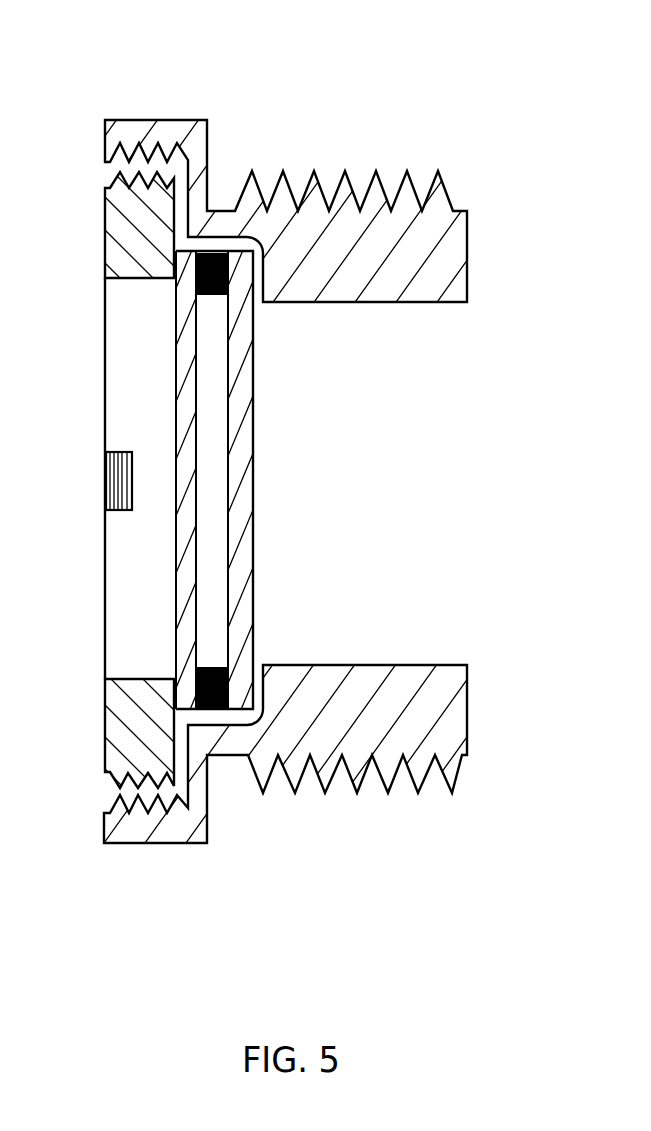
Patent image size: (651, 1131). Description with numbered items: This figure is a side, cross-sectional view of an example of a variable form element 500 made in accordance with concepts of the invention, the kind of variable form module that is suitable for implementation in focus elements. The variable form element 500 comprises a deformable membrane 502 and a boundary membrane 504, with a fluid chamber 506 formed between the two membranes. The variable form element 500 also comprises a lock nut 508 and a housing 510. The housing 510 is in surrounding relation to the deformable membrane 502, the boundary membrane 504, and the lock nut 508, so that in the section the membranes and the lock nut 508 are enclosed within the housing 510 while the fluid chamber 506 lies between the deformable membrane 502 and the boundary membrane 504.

The variable form element 500 is at (508, 87).
The deformable membrane 502 is at (254, 398).
The boundary membrane 504 is at (175, 390).
The fluid chamber 506 is at (210, 610).
The lock nut 508 is at (112, 481).
The housing 510 is at (325, 248).